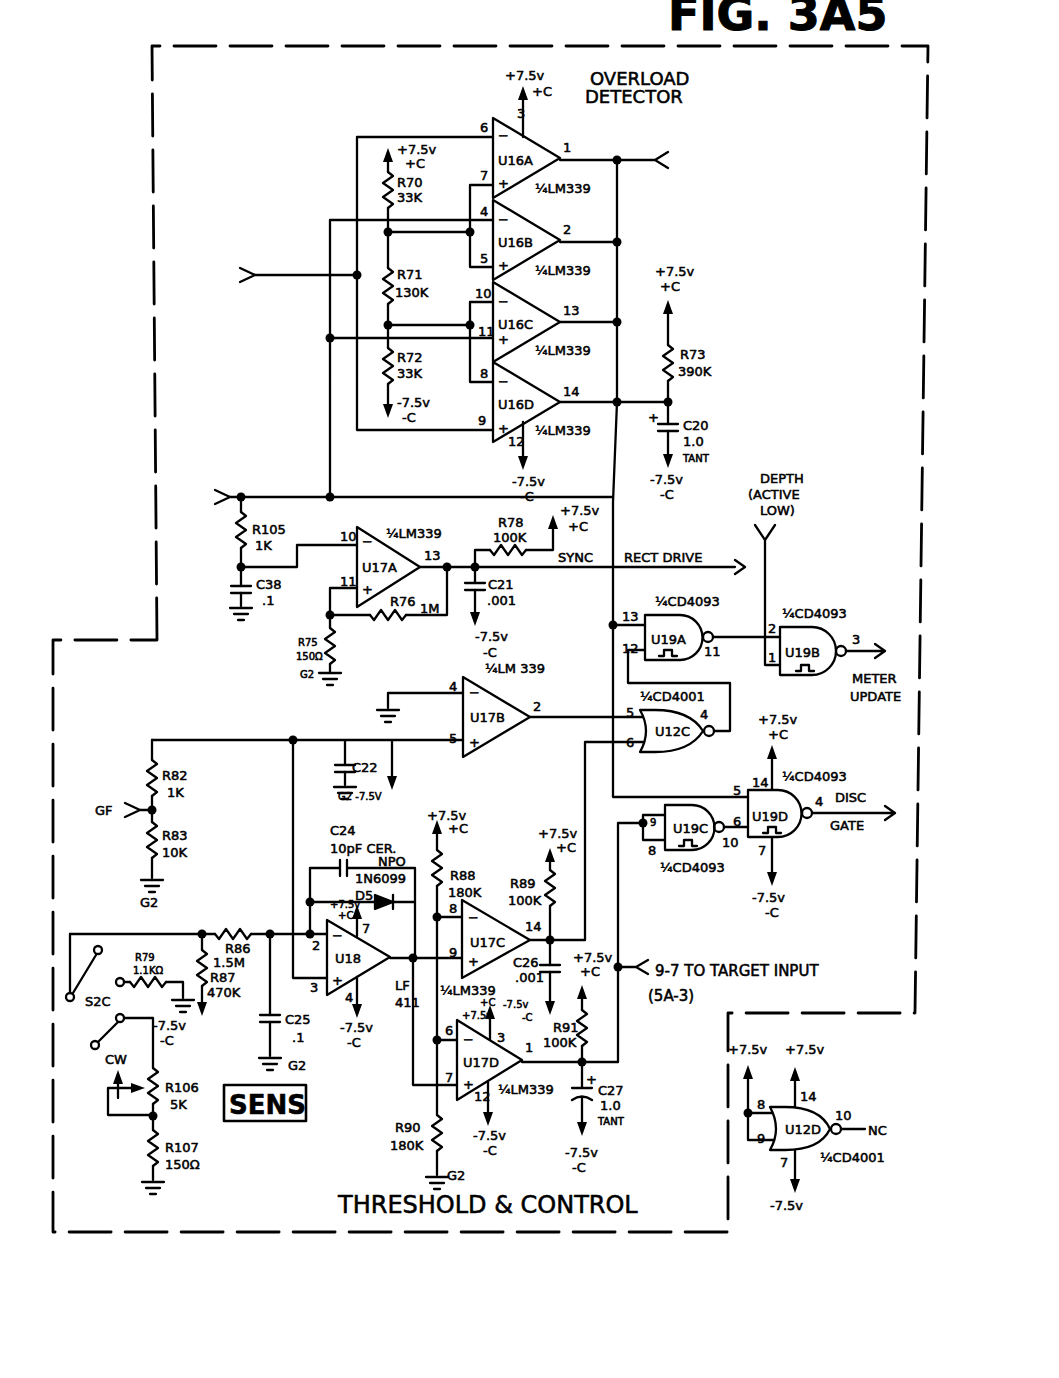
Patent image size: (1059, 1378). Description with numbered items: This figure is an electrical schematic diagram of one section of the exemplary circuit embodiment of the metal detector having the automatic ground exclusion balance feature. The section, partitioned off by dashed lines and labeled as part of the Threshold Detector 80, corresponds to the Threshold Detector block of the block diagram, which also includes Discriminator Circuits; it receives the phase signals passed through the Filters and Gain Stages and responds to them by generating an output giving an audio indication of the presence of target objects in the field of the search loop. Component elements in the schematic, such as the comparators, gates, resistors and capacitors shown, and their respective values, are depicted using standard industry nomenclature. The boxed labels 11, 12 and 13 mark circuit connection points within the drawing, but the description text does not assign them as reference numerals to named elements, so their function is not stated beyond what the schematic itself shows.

The Threshold Detector 80 is at (154, 278).
The XF signal connection 11 is at (271, 285).
The YF signal connection 12 is at (271, 488).
The comparator output bus 13 is at (634, 203).